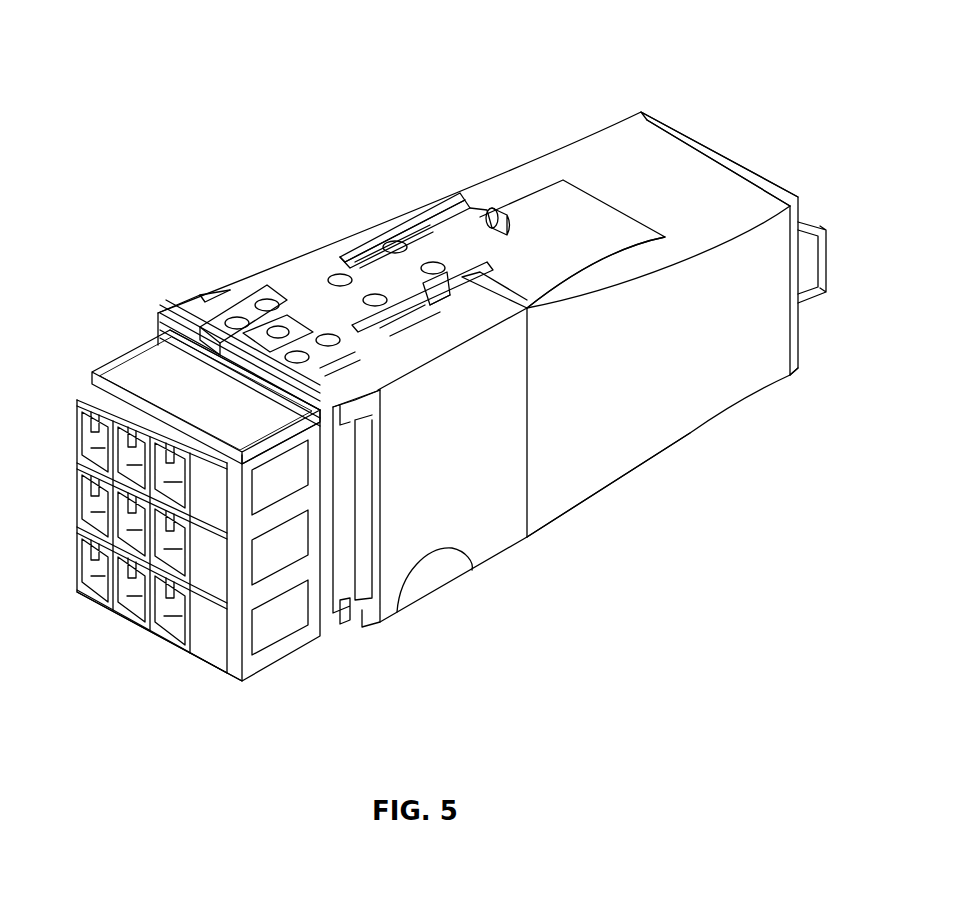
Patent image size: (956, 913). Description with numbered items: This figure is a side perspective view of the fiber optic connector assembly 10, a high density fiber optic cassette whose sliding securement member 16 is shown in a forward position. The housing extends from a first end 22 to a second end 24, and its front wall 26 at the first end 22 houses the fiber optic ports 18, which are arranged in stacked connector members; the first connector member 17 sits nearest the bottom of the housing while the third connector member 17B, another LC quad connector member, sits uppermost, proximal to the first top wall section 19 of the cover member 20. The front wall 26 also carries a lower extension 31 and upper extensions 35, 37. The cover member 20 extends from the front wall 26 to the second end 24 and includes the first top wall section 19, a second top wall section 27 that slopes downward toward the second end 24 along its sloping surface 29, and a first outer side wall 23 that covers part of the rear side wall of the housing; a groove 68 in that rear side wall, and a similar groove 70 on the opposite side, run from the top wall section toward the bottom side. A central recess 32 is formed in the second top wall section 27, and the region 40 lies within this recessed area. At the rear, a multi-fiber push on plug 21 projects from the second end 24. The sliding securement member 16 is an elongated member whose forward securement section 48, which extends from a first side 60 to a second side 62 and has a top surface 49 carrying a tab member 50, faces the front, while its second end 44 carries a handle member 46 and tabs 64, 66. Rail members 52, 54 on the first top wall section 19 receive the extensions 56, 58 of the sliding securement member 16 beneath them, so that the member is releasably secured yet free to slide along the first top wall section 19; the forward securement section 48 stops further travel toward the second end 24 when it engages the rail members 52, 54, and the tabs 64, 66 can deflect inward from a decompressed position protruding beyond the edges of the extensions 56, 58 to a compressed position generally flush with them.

The fiber optic connector assembly 10 is at (376, 78).
The sliding securement member 16 is at (323, 300).
The first connector member 17 is at (265, 628).
The third connector member 17B is at (112, 372).
The fiber optic ports 18 is at (92, 432).
The first top wall section 19 is at (235, 297).
The cover member 20 is at (604, 131).
The rear multi-fiber push on plug 21 is at (827, 293).
The first end 22 is at (270, 700).
The first outer side wall 23 is at (637, 380).
The second end 24 is at (803, 418).
The front wall 26 is at (196, 322).
The second top wall section 27 is at (695, 190).
The sloping surface 29 is at (672, 241).
The lower extension 31 is at (323, 636).
The recess 32 is at (556, 202).
The upper extension 35 is at (350, 418).
The upper extension 37 is at (163, 320).
The recessed surface 40 is at (583, 240).
The second end of sliding securement member 44 is at (444, 200).
The handle member 46 is at (470, 190).
The forward securement section 48 is at (250, 352).
The top surface 49 is at (244, 312).
The tab member 50 is at (284, 285).
The rail member 52 is at (460, 283).
The rail member 54 is at (378, 222).
The extension 56 is at (407, 310).
The extension 58 is at (338, 250).
The first side 60 is at (360, 356).
The second side 62 is at (237, 290).
The tab 64 is at (492, 265).
The tab 66 is at (410, 208).
The groove 68 is at (350, 511).
The groove 70 is at (132, 334).